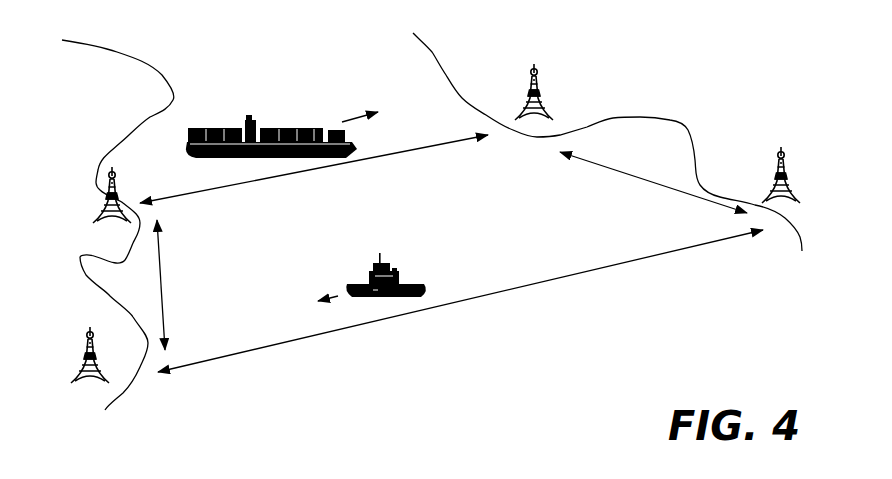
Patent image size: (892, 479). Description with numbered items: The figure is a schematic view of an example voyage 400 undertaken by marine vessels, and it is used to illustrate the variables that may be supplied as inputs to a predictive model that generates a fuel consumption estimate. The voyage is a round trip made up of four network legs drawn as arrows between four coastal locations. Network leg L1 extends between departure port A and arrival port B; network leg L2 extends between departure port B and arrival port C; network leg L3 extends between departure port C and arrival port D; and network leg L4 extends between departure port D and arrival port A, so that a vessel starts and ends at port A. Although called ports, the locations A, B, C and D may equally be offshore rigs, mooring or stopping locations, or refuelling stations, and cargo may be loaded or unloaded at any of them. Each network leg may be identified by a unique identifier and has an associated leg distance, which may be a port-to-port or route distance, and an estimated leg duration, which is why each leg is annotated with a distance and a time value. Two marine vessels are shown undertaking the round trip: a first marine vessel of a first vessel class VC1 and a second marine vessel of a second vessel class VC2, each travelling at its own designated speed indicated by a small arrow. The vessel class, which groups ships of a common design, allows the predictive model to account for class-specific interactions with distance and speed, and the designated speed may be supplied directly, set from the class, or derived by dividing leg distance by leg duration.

The example voyage 400 is at (432, 221).
The port A is at (94, 203).
The port B is at (550, 92).
The port C is at (795, 175).
The port D is at (73, 370).
The first vessel class VC1 is at (232, 127).
The second vessel class VC2 is at (398, 278).
The network leg L1 is at (423, 168).
The network leg L2 is at (613, 192).
The network leg L3 is at (518, 308).
The network leg L4 is at (192, 285).